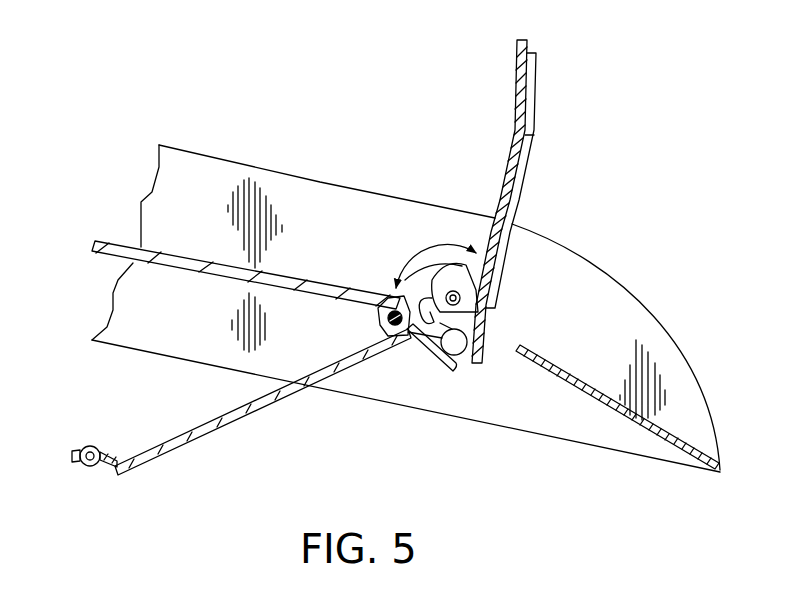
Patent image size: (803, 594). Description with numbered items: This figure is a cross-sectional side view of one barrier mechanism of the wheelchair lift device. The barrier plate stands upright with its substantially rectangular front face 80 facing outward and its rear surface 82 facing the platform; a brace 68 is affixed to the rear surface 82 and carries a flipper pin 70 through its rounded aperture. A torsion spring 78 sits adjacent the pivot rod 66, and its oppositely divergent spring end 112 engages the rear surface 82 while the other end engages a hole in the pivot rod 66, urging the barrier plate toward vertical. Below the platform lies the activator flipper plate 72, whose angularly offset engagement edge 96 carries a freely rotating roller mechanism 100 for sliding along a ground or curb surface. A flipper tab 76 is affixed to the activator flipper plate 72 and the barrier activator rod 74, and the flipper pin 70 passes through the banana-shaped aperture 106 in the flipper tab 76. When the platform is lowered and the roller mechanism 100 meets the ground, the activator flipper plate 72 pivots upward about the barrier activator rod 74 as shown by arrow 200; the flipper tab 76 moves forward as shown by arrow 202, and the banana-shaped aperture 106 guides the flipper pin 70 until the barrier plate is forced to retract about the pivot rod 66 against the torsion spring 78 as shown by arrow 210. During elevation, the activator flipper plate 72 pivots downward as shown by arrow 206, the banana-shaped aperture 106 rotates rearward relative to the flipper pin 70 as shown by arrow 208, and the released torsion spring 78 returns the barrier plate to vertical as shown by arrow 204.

The pivot rod 66 is at (456, 368).
The brace 68 is at (471, 292).
The flipper pin 70 is at (422, 258).
The activator flipper plate 72 is at (244, 412).
The barrier activator rod 74 is at (397, 338).
The flipper tab 76 is at (392, 303).
The torsion spring 78 is at (457, 357).
The front face 80 is at (526, 184).
The rear surface 82 is at (500, 192).
The angularly offset engagement edge 96 is at (113, 470).
The roller mechanism 100 is at (87, 447).
The banana-shaped aperture 106 is at (398, 292).
The spring end 112 is at (422, 318).
The arrow 200 is at (153, 435).
The arrow 202 is at (420, 288).
The arrow 204 is at (510, 90).
The arrow 206 is at (178, 450).
The arrow 208 is at (428, 340).
The arrow 210 is at (590, 130).